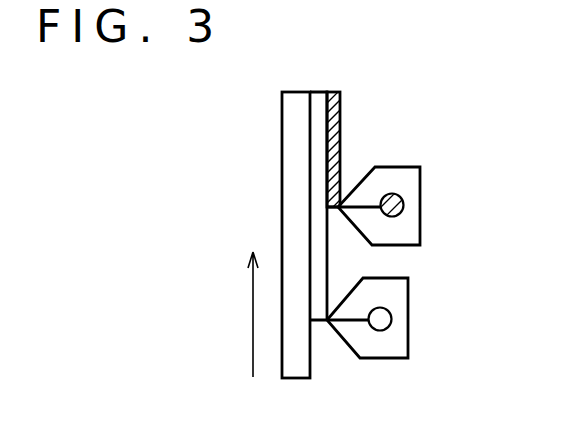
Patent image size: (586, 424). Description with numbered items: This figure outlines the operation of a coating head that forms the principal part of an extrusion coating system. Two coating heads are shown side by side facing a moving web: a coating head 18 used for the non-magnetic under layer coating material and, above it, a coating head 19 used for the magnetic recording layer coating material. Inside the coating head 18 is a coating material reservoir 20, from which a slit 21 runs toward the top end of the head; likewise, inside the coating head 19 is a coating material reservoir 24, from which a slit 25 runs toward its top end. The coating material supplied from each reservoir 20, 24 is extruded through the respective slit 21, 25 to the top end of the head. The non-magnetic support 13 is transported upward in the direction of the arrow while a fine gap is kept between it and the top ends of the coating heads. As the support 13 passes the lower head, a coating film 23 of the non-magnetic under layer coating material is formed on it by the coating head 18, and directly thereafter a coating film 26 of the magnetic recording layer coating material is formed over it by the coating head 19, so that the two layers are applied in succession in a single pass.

The non-magnetic support 13 is at (290, 144).
The coating film of non-magnetic under layer coating material 23 is at (320, 92).
The coating film of magnetic recording layer coating material 26 is at (336, 122).
The coating head used for magnetic recording layer coating material 19 is at (421, 184).
The slit 25 is at (371, 203).
The coating material reservoir 24 is at (401, 207).
The coating head used for non-magnetic under layer coating material 18 is at (409, 346).
The slit 21 is at (348, 321).
The coating material reservoir 20 is at (382, 319).